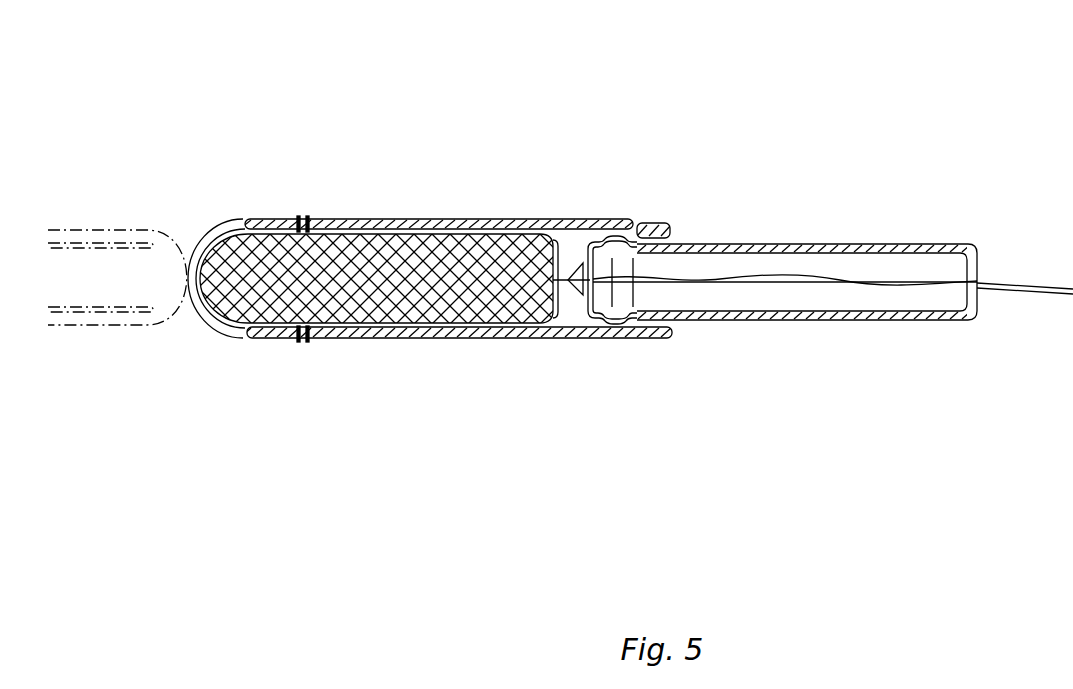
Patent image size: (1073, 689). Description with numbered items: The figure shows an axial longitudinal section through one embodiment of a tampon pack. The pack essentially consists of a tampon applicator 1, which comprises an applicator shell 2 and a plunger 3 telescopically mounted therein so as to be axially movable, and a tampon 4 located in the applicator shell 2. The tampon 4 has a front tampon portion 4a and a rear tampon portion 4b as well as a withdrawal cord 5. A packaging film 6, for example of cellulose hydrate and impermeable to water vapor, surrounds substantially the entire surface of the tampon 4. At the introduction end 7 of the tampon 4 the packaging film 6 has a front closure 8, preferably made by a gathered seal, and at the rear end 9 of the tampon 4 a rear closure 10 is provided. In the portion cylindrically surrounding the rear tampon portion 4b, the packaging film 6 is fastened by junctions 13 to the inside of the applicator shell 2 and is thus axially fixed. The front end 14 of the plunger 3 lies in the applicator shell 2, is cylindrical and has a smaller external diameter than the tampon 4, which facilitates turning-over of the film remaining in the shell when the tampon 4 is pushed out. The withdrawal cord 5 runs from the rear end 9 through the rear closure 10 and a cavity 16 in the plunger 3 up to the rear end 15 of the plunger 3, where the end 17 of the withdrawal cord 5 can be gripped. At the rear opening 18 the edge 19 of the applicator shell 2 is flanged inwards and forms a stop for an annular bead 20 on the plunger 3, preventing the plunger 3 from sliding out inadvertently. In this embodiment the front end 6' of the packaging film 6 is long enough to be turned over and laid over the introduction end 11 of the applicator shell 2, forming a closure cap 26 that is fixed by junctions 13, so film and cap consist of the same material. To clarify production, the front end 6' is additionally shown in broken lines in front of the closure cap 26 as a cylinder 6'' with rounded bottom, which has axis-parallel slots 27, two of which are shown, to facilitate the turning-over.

The tampon applicator 1 is at (832, 320).
The applicator shell 2 is at (630, 230).
The plunger 3 is at (795, 244).
The tampon 4 is at (457, 235).
The front tampon portion 4a is at (235, 296).
The rear tampon portion 4b is at (484, 288).
The withdrawal cord 5 is at (860, 280).
The packaging film 6 is at (569, 151).
The front end of the packaging film 6' is at (206, 141).
The cylinder with rounded bottom 6'' is at (137, 404).
The introduction end of the tampon 7 is at (203, 297).
The front closure 8 is at (184, 270).
The rear end of the tampon 9 is at (550, 300).
The rear closure 10 is at (570, 292).
The introduction end of the applicator shell 11 is at (248, 218).
The junctions 13 is at (303, 218).
The front end of the plunger 14 is at (592, 316).
The rear end of the plunger 15 is at (975, 252).
The cavity 16 is at (893, 300).
The end of the withdrawal cord 17 is at (1072, 336).
The rear opening 18 is at (672, 232).
The flanged edge 19 is at (662, 224).
The annular bead 20 is at (628, 336).
The closure cap 26 is at (278, 340).
The slots 27 is at (96, 308).